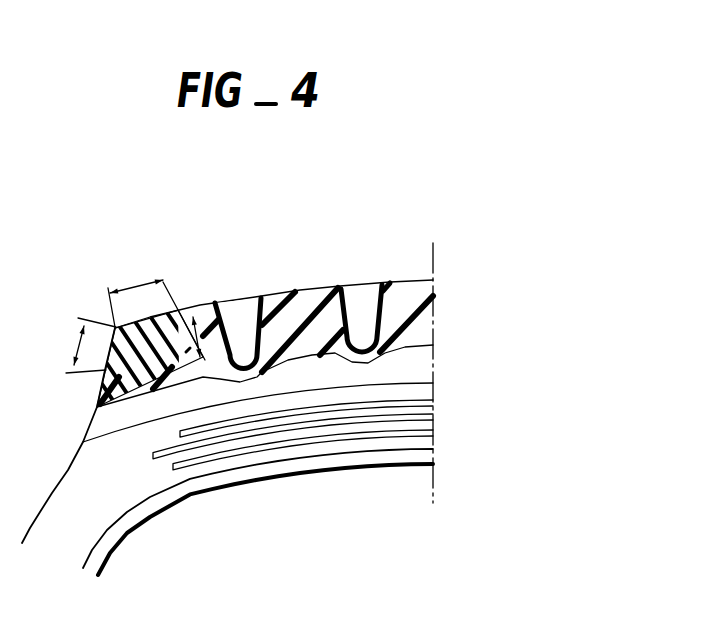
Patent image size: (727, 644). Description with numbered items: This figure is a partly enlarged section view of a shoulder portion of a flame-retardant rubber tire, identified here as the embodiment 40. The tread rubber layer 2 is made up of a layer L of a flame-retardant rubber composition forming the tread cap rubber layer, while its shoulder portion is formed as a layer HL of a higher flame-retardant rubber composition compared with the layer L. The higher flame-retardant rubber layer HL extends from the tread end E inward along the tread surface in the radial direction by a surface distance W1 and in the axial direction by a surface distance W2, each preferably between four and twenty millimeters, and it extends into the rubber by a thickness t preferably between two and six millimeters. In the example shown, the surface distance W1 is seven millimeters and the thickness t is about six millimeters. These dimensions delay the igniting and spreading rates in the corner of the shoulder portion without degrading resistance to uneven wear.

The tread portion 40 is at (240, 374).
The tread rubber layer 2 is at (428, 318).
The tread end E is at (138, 385).
The higher flame-retardant rubber layer HL is at (152, 322).
The layer of flame-retardant rubber composition L is at (296, 300).
The thickness t is at (196, 325).
The surface distance inward in the radial direction W1 is at (81, 345).
The surface distance inward in the axial direction W2 is at (156, 309).